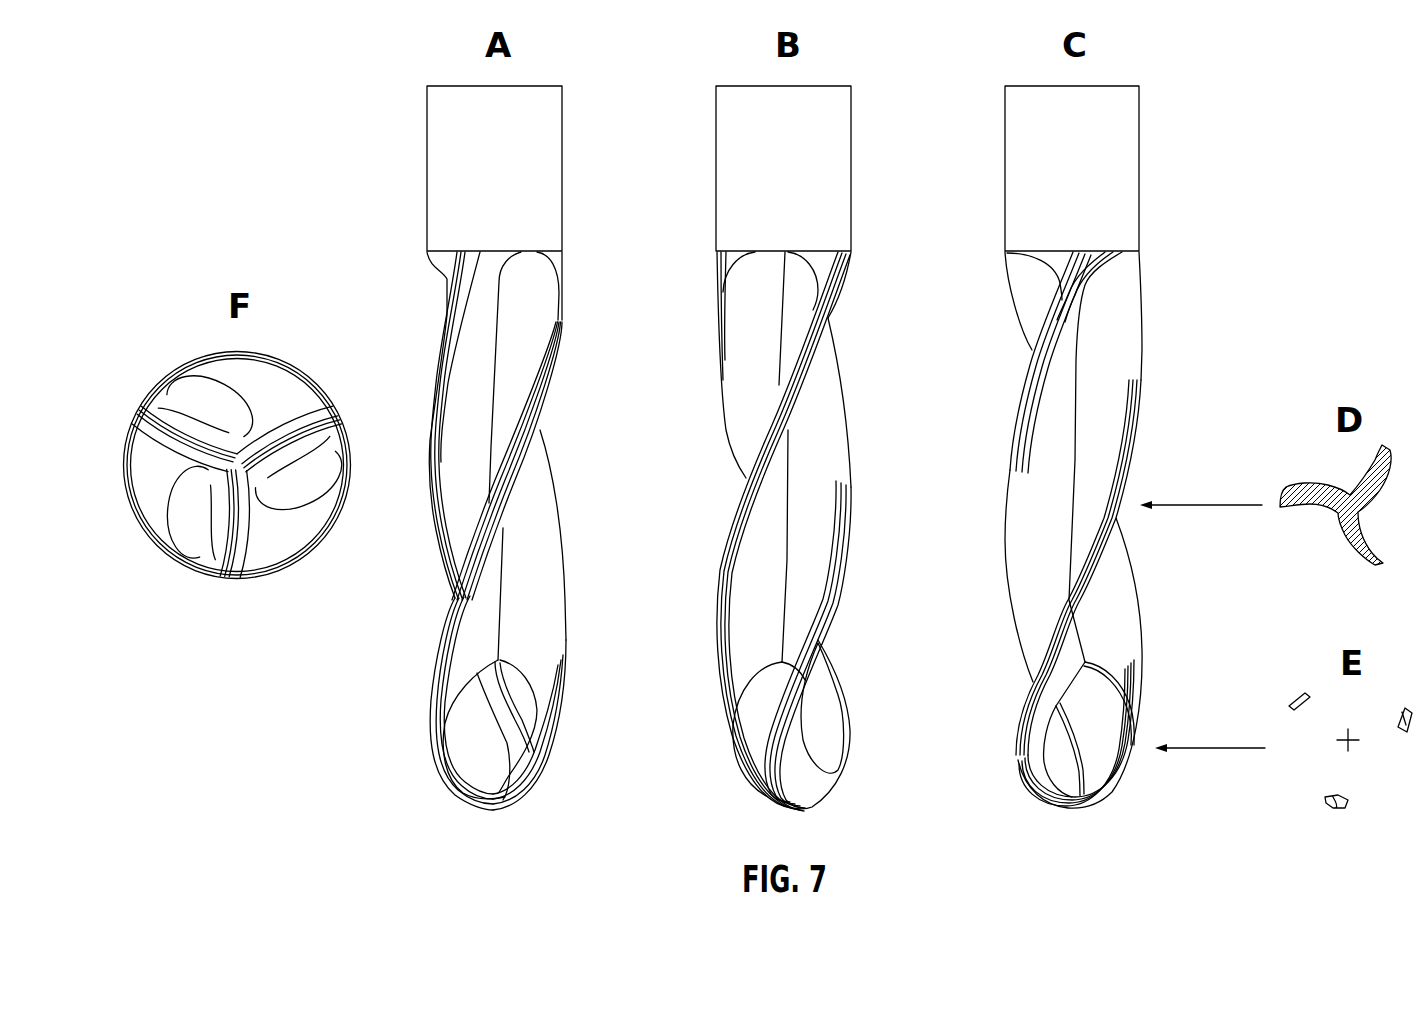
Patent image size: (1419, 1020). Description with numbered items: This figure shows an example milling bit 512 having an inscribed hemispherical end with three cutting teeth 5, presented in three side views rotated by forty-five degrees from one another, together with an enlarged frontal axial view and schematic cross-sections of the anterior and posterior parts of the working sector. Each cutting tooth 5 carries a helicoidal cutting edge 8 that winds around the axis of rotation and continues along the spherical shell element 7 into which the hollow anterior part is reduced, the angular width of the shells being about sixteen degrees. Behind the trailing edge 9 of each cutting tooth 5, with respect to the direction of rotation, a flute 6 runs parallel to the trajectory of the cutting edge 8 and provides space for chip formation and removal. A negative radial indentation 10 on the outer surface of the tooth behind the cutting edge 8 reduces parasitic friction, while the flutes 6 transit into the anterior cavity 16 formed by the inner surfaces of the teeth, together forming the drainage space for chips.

The milling bit 512 is at (376, 121).
The cutting tooth 5 is at (442, 653).
The flute 6 is at (498, 365).
The shell element 7 is at (510, 730).
The cutting edge 8 is at (1057, 613).
The trailing edge 9 is at (797, 383).
The negative radial indentation 10 is at (523, 467).
The anterior cavity 16 is at (1114, 734).